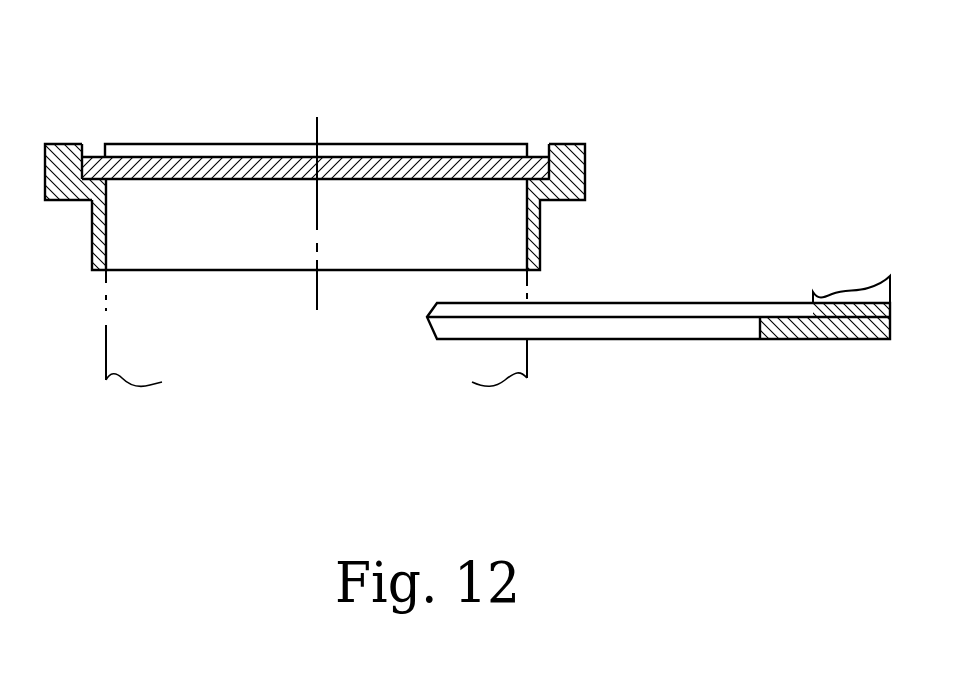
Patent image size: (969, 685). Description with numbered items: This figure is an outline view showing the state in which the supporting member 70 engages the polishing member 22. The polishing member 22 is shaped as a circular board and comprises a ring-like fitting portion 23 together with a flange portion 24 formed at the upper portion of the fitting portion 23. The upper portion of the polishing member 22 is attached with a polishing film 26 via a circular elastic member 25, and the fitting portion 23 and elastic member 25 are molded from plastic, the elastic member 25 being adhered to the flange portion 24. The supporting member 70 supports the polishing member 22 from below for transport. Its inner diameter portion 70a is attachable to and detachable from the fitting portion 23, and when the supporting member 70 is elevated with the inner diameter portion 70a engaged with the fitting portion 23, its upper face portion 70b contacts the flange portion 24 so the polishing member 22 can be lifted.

The polishing member 22 is at (605, 145).
The fitting portion 23 is at (91, 258).
The flange portion 24 is at (53, 143).
The elastic member 25 is at (230, 165).
The polishing film 26 is at (172, 143).
The supporting member 70 is at (633, 340).
The inner diameter portion 70a is at (748, 332).
The upper face portion 70b is at (692, 311).